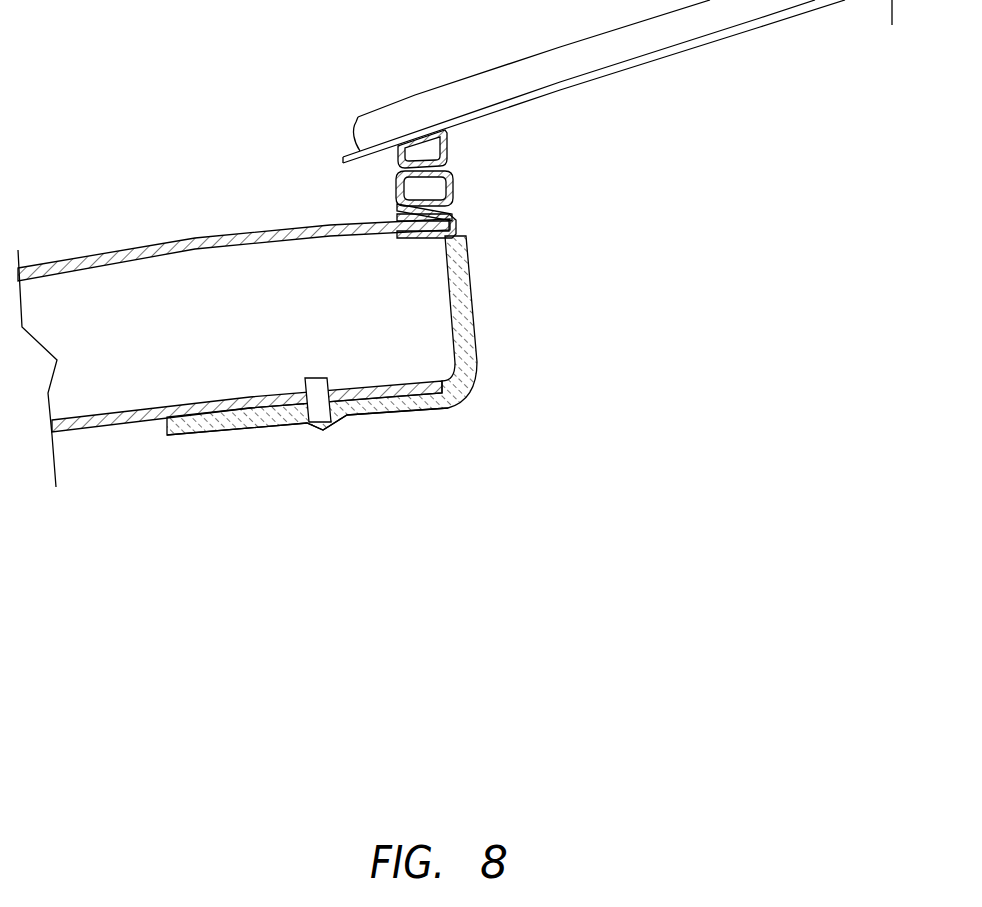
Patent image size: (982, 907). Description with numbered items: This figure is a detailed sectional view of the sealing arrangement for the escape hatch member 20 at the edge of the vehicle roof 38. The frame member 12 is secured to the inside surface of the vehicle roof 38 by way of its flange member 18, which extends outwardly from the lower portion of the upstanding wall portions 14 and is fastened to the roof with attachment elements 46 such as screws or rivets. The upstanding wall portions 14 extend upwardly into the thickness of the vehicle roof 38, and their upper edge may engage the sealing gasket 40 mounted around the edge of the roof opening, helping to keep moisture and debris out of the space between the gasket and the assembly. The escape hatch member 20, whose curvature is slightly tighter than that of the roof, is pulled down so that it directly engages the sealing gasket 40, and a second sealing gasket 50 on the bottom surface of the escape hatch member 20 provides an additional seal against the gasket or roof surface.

The frame member 12 is at (482, 375).
The upstanding wall portions 14 is at (468, 290).
The flange member 18 is at (412, 412).
The escape hatch member 20 is at (553, 67).
The vehicle roof 38 is at (195, 238).
The sealing gasket 40 is at (453, 195).
The attachment elements 46 is at (323, 430).
The second sealing gasket 50 is at (450, 148).